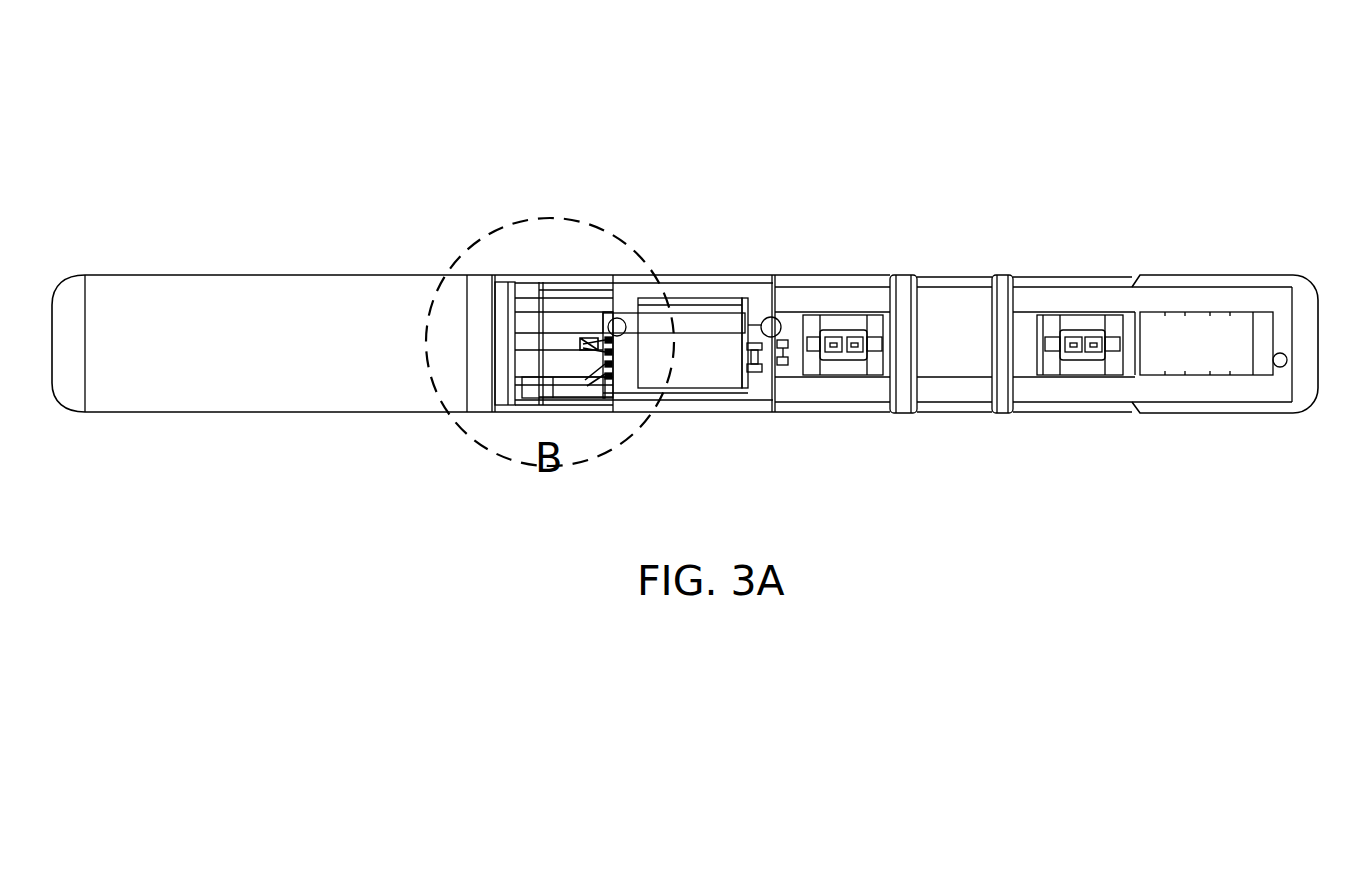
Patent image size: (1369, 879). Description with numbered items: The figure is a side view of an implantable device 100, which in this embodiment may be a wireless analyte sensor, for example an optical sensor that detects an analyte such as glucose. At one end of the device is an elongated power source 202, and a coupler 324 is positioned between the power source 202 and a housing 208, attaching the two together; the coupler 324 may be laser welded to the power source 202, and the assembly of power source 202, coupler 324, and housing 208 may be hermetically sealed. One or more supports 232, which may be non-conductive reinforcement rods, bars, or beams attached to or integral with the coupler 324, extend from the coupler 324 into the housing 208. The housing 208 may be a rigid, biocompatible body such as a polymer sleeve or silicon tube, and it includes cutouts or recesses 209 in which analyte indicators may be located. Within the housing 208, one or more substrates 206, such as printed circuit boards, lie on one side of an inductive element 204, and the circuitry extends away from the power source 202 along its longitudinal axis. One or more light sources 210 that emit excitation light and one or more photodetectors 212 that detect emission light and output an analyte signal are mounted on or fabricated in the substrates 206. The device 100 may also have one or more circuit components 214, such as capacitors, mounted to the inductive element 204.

The implantable device 100 is at (355, 115).
The power source 202 is at (270, 400).
The inductive element 204 is at (1283, 322).
The substrates 206 is at (955, 352).
The housing 208 is at (1265, 405).
The cutouts or recesses 209 is at (815, 282).
The light sources 210 is at (1048, 343).
The photodetectors 212 is at (878, 322).
The circuit components 214 is at (757, 372).
The supports 232 is at (720, 296).
The coupler 324 is at (533, 275).